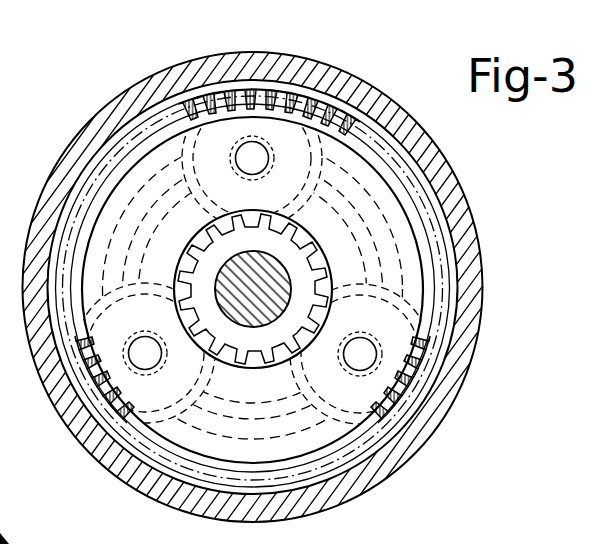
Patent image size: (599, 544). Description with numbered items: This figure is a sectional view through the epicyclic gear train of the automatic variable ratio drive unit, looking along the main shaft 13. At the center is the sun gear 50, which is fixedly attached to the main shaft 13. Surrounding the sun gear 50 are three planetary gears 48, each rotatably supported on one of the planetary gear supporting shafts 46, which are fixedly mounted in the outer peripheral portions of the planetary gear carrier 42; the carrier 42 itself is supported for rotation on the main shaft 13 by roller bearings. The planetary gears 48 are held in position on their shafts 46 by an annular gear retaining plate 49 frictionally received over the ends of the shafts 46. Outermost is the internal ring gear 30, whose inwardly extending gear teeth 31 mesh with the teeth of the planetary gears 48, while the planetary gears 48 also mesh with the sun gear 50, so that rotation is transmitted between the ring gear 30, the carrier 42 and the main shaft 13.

The main shaft 13 is at (270, 272).
The internal ring gear 30 is at (92, 126).
The inwardly extending gear teeth 31 is at (325, 110).
The planetary gear carrier 42 is at (400, 416).
The planetary gear supporting shafts 46 is at (260, 150).
The planetary gears 48 is at (254, 100).
The annular gear retaining plate 49 is at (415, 297).
The sun gear 50 is at (192, 243).